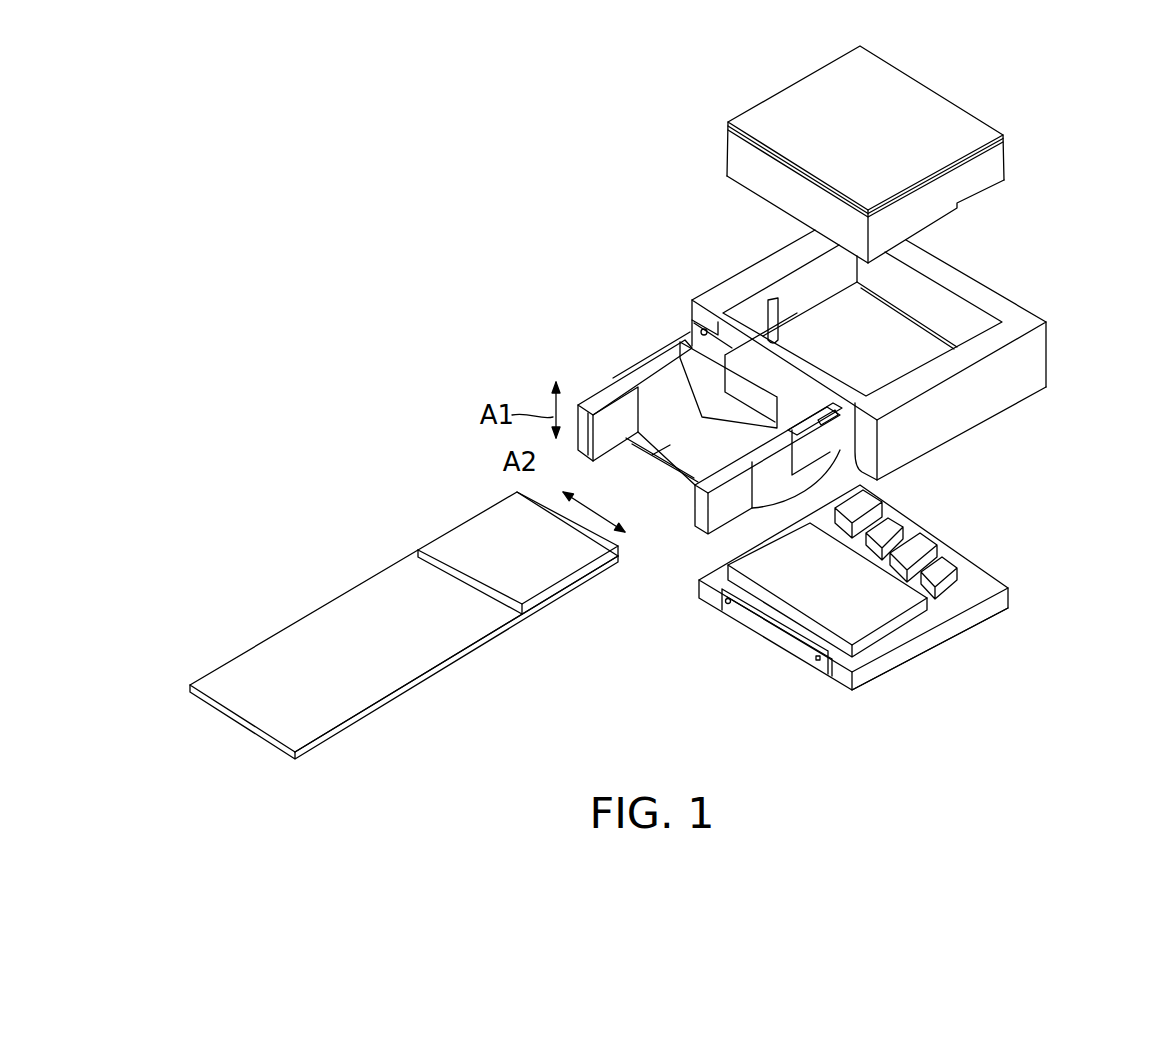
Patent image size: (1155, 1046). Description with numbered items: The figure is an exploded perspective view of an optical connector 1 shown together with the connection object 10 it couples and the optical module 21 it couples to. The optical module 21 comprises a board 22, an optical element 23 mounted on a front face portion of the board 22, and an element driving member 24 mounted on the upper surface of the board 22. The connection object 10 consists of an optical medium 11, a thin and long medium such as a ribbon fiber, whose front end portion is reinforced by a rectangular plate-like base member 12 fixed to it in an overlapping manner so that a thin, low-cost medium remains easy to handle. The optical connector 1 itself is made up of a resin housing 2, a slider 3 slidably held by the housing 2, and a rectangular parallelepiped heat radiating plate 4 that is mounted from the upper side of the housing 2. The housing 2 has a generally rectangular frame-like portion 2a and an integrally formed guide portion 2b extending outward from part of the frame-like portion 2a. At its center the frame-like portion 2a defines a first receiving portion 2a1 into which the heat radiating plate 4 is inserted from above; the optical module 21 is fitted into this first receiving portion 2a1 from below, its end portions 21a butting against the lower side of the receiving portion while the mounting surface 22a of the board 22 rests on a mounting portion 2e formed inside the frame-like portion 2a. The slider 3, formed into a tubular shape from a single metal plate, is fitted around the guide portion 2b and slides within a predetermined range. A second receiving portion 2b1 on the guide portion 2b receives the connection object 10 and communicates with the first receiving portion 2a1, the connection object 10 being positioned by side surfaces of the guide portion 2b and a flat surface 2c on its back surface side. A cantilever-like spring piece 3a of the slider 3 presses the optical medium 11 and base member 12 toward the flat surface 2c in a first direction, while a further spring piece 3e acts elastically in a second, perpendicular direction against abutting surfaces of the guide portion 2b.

The optical connector 1 is at (824, 307).
The housing 2 is at (824, 374).
The frame-like portion 2a is at (1003, 302).
The first receiving portion 2a1 is at (880, 278).
The guide portion 2b is at (601, 388).
The second receiving portion 2b1 is at (636, 433).
The flat surface 2c is at (680, 460).
The mounting portion 2e is at (915, 331).
The slider 3 is at (714, 436).
The spring piece 3a is at (690, 470).
The spring piece 3e is at (803, 480).
The heat radiating plate 4 is at (922, 83).
The connection object 10 is at (404, 609).
The optical medium 11 is at (437, 667).
The base member 12 is at (508, 545).
The optical module 21 is at (884, 618).
The end portions 21a is at (720, 597).
The board 22 is at (980, 556).
The mounting surface 22a is at (1012, 598).
The optical element 23 is at (778, 633).
The element driving member 24 is at (907, 587).